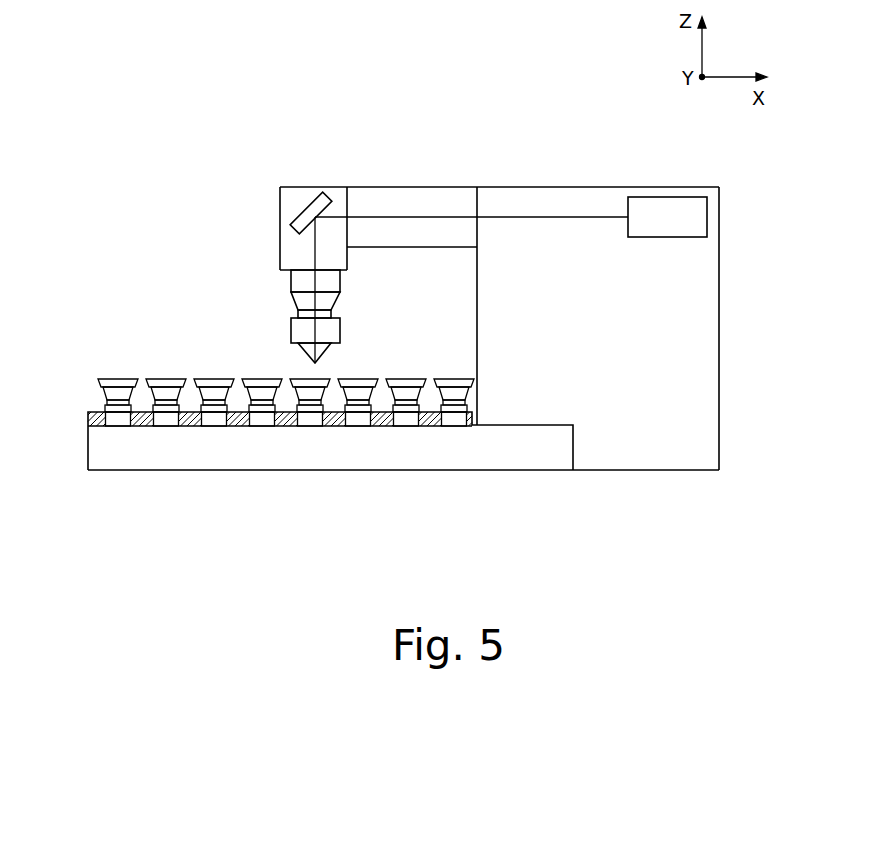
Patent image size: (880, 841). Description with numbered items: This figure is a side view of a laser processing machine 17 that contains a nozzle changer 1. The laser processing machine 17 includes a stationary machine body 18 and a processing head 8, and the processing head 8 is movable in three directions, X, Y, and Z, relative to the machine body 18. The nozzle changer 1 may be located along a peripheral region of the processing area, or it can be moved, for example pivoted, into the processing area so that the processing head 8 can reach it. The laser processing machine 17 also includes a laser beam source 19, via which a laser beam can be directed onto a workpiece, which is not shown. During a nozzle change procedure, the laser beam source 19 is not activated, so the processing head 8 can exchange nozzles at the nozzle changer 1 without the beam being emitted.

The laser processing machine 17 is at (365, 261).
The machine body 18 is at (507, 193).
The laser beam source 19 is at (665, 210).
The processing head 8 is at (270, 328).
The nozzle changer 1 is at (72, 412).